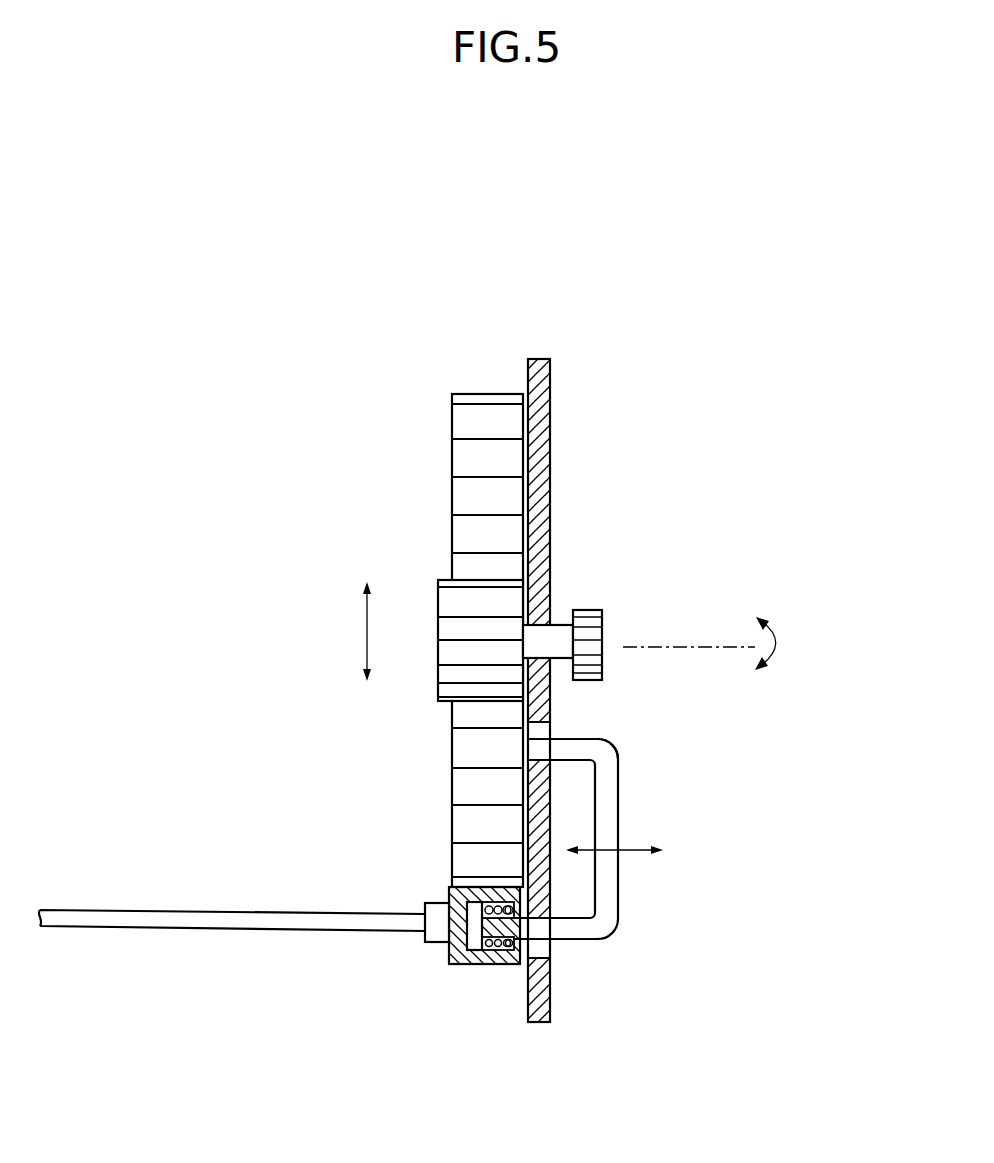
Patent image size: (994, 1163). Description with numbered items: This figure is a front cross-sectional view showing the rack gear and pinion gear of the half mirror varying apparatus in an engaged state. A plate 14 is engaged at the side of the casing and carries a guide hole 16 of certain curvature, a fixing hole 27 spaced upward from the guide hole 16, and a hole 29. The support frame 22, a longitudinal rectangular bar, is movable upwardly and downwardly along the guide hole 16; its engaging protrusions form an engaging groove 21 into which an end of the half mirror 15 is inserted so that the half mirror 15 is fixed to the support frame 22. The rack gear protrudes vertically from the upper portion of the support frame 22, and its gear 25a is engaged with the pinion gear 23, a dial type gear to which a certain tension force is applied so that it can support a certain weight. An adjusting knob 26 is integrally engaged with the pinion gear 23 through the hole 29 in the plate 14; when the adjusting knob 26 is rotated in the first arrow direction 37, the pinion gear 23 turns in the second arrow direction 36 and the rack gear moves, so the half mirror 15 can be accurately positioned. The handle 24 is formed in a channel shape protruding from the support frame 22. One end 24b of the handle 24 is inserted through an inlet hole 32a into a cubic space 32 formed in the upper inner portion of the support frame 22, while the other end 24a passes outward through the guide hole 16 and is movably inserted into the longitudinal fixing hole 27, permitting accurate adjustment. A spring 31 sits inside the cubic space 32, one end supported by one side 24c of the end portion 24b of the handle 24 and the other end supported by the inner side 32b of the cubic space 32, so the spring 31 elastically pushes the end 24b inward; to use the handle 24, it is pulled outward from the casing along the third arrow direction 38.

The plate 14 is at (540, 477).
The half mirror 15 is at (258, 915).
The guide hole 16 is at (546, 960).
The engaging groove 21 is at (425, 907).
The support frame 22 is at (448, 888).
The pinion gear 23 is at (438, 578).
The handle 24 is at (607, 797).
The other end of handle 24a is at (528, 752).
The one end of handle 24b is at (450, 952).
The one side of end portion of handle 24c is at (478, 955).
The gear 25a is at (475, 425).
The adjusting knob 26 is at (602, 617).
The fixing hole 27 is at (548, 726).
The hole 29 is at (540, 620).
The spring 31 is at (492, 965).
The cubic space 32 is at (490, 903).
The inlet hole 32a is at (510, 944).
The inner side of cubic space 32b is at (510, 906).
The second arrow direction 36 is at (367, 632).
The first arrow direction 37 is at (777, 640).
The third arrow direction 38 is at (640, 848).